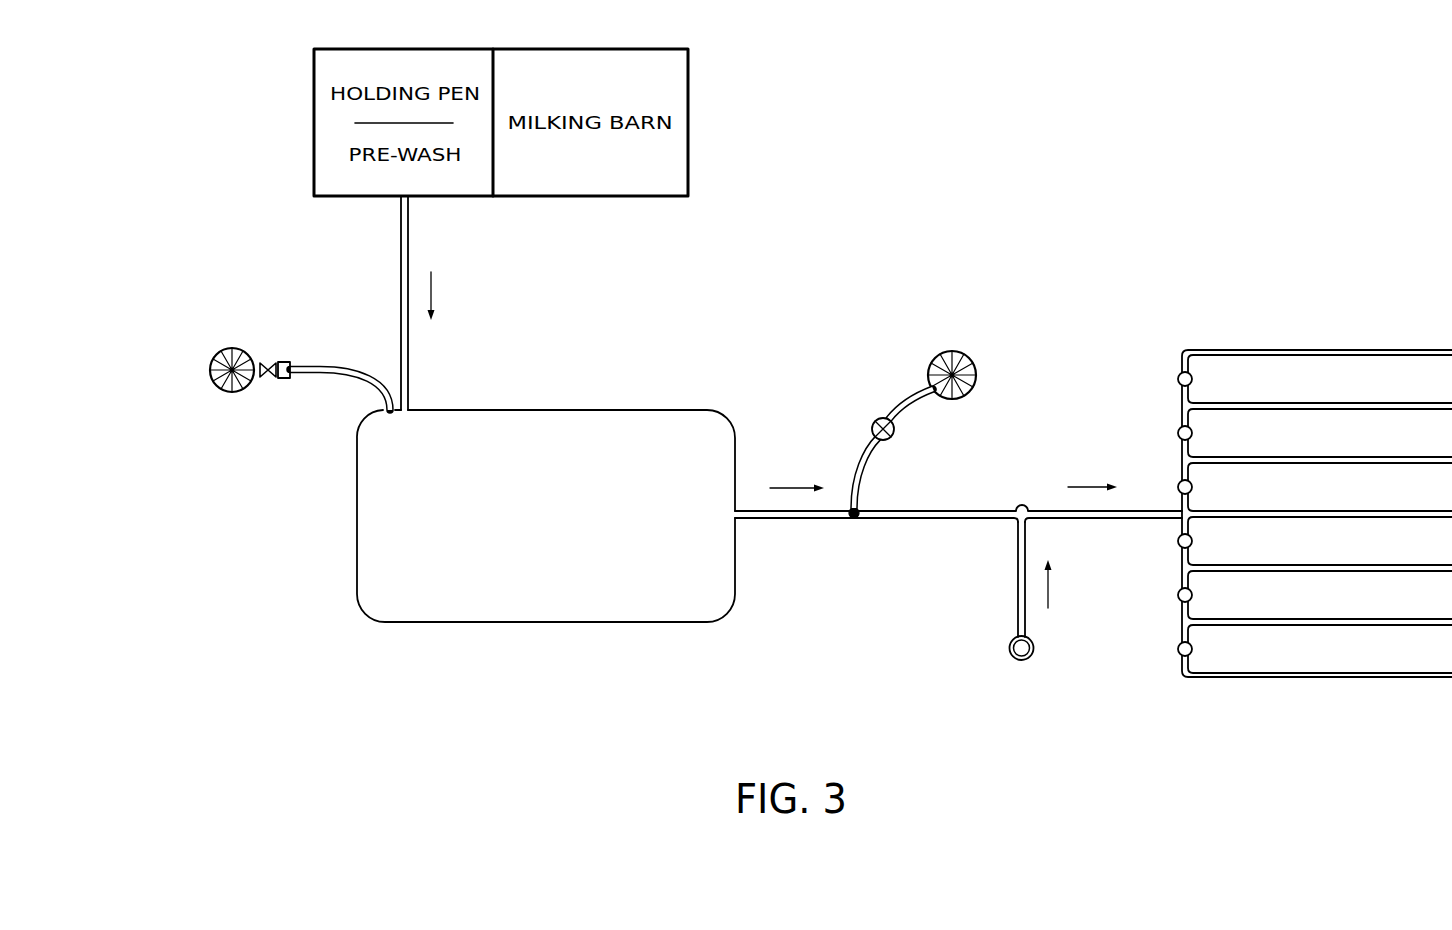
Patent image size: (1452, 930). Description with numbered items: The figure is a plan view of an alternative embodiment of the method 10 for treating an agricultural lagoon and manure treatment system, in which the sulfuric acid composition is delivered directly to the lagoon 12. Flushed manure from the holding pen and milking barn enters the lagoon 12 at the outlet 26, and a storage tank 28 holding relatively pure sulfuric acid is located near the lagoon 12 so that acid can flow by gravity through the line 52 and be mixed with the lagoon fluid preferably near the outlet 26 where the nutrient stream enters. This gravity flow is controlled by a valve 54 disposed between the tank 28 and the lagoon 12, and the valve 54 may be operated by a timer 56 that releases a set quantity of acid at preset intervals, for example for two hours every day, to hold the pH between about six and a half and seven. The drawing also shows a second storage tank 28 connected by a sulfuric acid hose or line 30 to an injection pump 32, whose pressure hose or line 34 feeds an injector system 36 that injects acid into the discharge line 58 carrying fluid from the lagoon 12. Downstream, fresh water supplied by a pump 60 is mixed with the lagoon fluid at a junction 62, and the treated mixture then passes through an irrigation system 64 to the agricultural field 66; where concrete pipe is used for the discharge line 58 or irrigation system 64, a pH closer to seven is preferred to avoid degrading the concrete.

The method of treating agricultural lagoons and manure treatment systems 10 is at (1106, 190).
The lagoon 12 is at (402, 528).
The outlet 26 is at (412, 421).
The storage tank 28 is at (218, 349).
The sulfuric acid hose or line 30 is at (906, 398).
The sulfuric acid injection pump 32 is at (870, 420).
The sulfuric acid pressure hose or line 34 is at (856, 468).
The injector system 36 is at (853, 522).
The line 52 is at (364, 378).
The valve 54 is at (268, 380).
The timer 56 is at (285, 358).
The discharge line 58 is at (928, 522).
The pump 60 is at (1030, 658).
The junction 62 is at (1022, 506).
The irrigation system 64 is at (1178, 377).
The agricultural field 66 is at (1278, 385).